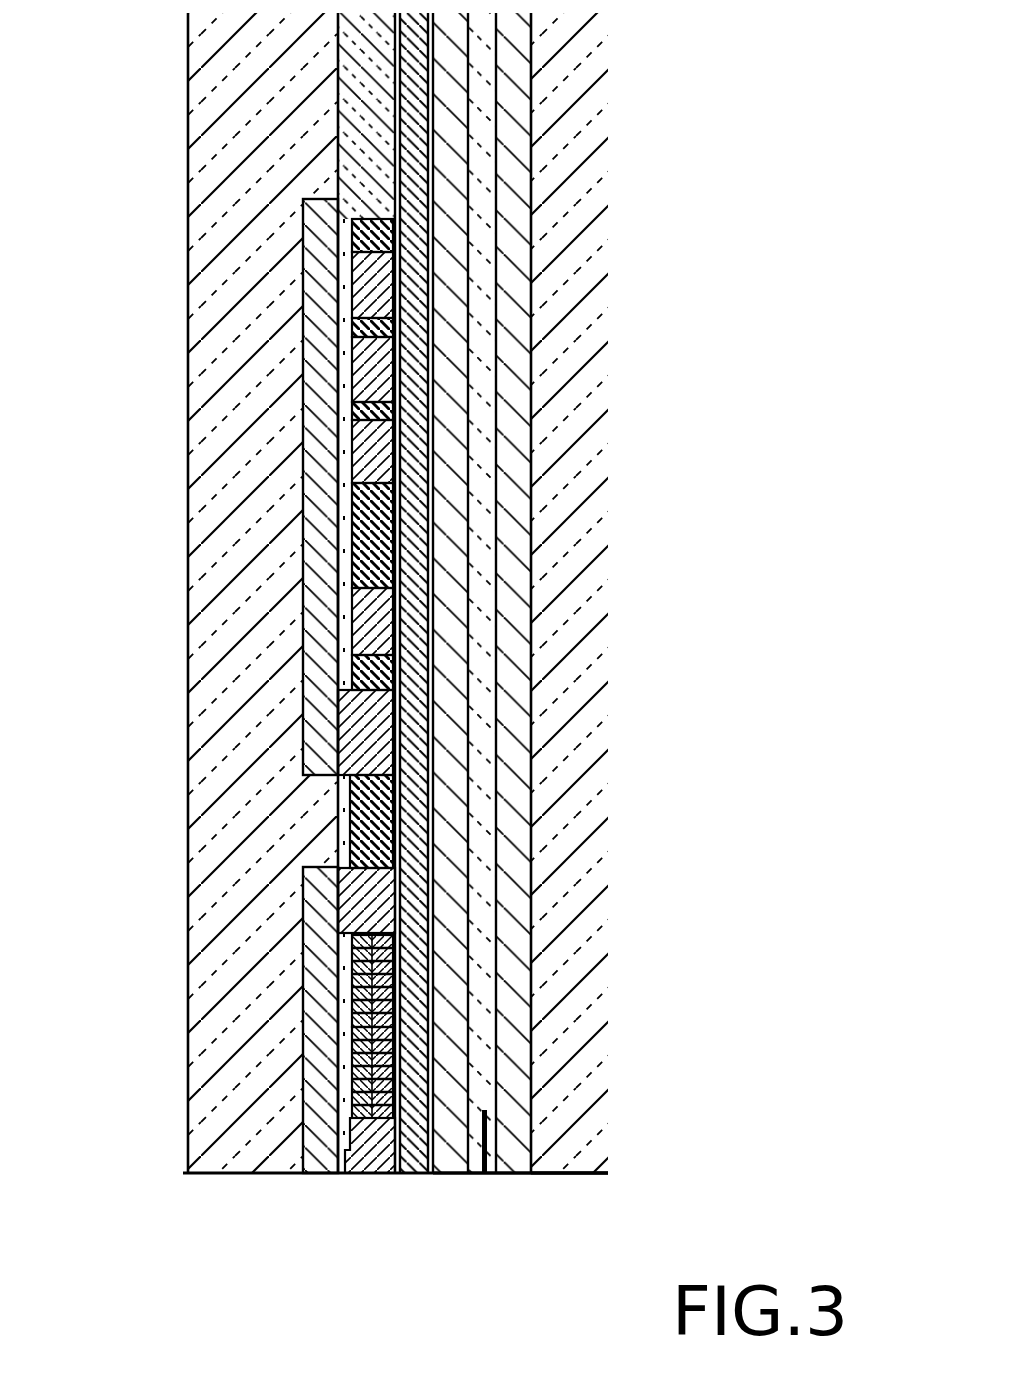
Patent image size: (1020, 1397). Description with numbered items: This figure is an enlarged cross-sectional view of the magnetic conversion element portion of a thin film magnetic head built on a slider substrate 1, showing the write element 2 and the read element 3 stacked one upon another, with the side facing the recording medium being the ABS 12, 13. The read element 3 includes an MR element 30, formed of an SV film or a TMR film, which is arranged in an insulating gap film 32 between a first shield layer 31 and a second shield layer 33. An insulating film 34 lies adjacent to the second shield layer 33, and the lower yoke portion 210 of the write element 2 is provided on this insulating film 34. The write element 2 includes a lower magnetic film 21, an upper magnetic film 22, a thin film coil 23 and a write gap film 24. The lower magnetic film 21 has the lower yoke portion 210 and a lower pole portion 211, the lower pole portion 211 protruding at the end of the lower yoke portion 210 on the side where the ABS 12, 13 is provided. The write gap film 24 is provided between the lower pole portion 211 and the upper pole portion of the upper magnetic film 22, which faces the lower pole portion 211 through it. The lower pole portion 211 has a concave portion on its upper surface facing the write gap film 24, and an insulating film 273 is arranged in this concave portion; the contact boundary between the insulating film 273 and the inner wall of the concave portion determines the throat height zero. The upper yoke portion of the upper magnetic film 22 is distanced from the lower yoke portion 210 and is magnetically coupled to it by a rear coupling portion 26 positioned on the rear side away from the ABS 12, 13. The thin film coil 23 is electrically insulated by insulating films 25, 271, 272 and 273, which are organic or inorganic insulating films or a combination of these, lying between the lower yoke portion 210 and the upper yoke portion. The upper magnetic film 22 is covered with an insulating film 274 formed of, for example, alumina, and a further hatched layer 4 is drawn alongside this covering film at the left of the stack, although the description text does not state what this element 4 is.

The slider substrate 1 is at (562, 458).
The write element 2 is at (293, 1146).
The read element 3 is at (490, 1177).
The sealing material 4 is at (322, 628).
The ABS 12 is at (580, 1176).
The ABS 13 is at (649, 1205).
The lower magnetic film 21 is at (437, 840).
The upper magnetic film 22 is at (296, 1044).
The thin film coil 23 is at (372, 1007).
The write gap film 24 is at (341, 1176).
The insulating film 25 is at (375, 941).
The rear coupling portion 26 is at (360, 897).
The MR element 30 is at (488, 1128).
The first shield layer 31 is at (502, 682).
The insulating gap film 32 is at (482, 628).
The second shield layer 33 is at (447, 573).
The insulating film 34 is at (433, 519).
The lower yoke portion 210 is at (415, 1025).
The lower pole portion 211 is at (388, 1176).
The insulating film 271 is at (395, 969).
The insulating film 272 is at (345, 830).
The insulating film 273 is at (345, 1124).
The insulating film 274 is at (227, 452).